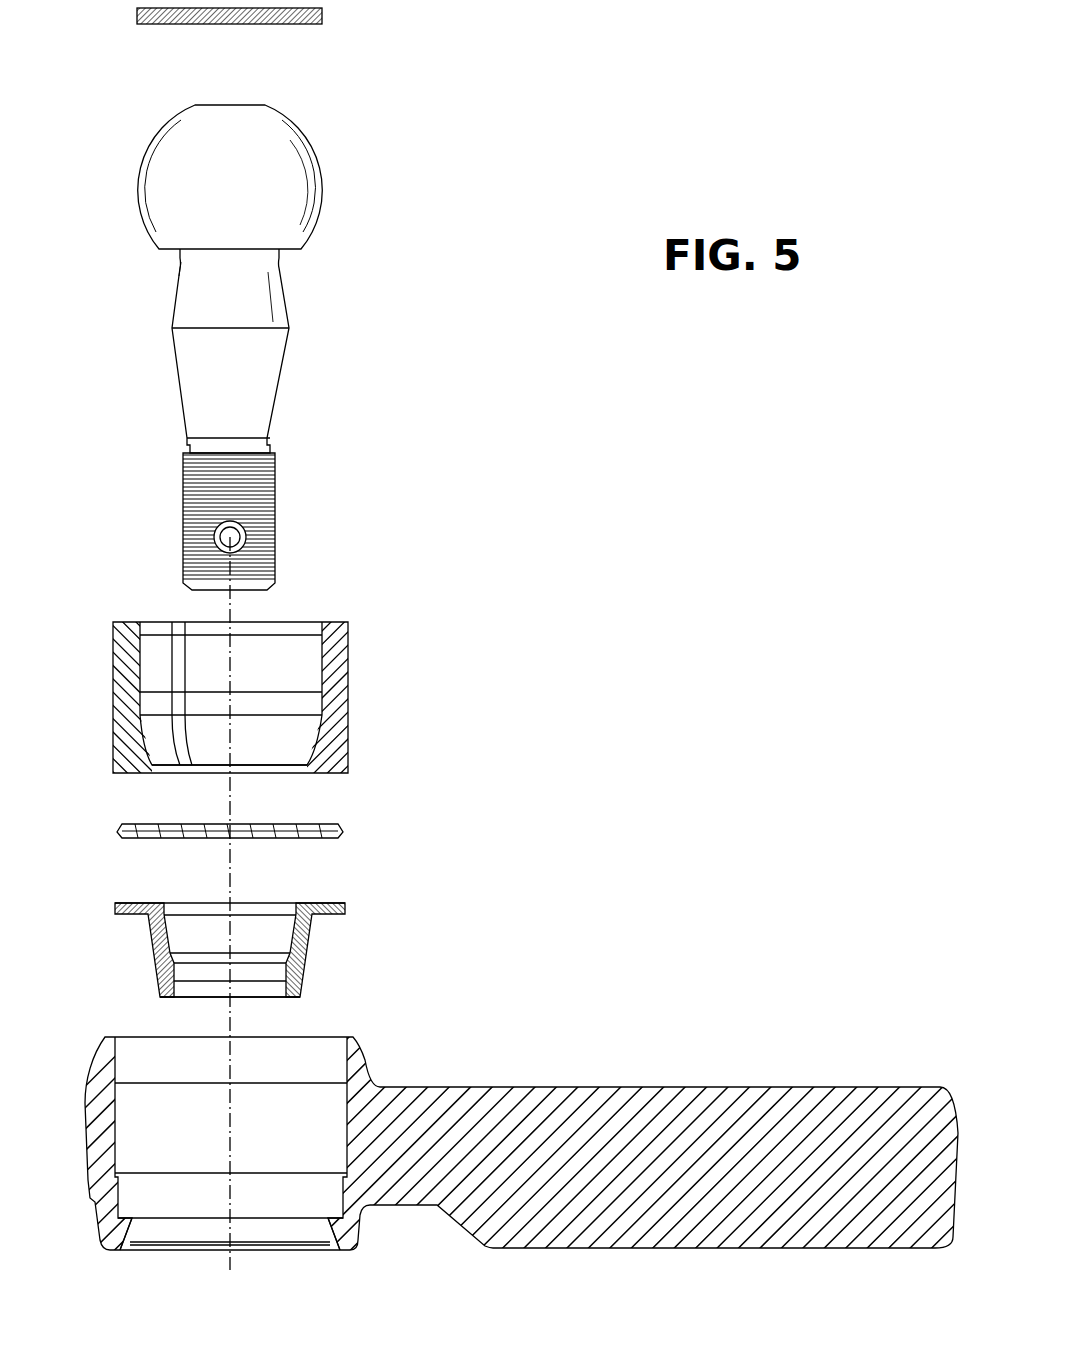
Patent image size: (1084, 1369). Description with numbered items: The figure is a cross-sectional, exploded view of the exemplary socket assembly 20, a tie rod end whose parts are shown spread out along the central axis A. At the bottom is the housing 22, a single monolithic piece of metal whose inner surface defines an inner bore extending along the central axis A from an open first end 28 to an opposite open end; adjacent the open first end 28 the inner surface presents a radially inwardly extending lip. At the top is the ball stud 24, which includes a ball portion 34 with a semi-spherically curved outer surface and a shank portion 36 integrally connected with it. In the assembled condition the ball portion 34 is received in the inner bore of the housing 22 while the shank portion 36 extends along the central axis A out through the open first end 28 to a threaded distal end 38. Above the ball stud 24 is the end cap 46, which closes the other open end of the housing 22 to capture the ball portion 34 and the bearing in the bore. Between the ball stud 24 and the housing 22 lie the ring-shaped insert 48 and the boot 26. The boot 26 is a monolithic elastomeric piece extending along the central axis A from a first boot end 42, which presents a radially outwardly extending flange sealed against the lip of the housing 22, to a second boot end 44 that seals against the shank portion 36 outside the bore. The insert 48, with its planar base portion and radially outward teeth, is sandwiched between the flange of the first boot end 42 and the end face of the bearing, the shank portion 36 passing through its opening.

The socket assembly 20 is at (455, 200).
The housing 22 is at (542, 1144).
The ball stud 24 is at (307, 120).
The boot 26 is at (223, 932).
The open first end 28 is at (175, 1230).
The ball portion 34 is at (178, 165).
The shank portion 36 is at (257, 390).
The threaded distal end 38 is at (275, 508).
The first boot end 42 is at (323, 903).
The second boot end 44 is at (297, 982).
The end cap 46 is at (322, 13).
The ring-shaped insert 48 is at (322, 821).
The central axis A is at (232, 1253).